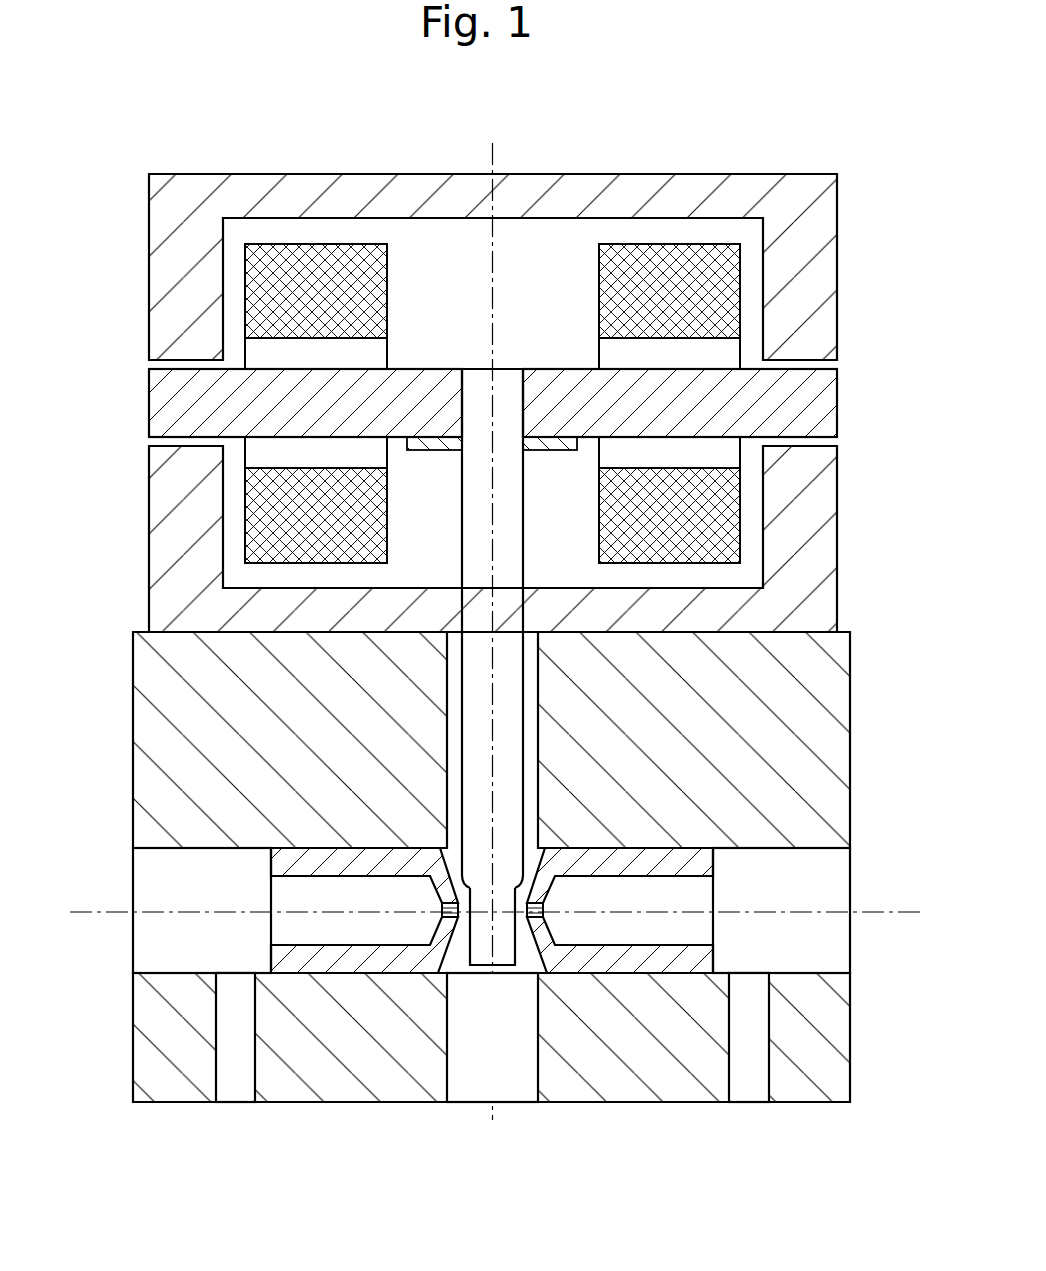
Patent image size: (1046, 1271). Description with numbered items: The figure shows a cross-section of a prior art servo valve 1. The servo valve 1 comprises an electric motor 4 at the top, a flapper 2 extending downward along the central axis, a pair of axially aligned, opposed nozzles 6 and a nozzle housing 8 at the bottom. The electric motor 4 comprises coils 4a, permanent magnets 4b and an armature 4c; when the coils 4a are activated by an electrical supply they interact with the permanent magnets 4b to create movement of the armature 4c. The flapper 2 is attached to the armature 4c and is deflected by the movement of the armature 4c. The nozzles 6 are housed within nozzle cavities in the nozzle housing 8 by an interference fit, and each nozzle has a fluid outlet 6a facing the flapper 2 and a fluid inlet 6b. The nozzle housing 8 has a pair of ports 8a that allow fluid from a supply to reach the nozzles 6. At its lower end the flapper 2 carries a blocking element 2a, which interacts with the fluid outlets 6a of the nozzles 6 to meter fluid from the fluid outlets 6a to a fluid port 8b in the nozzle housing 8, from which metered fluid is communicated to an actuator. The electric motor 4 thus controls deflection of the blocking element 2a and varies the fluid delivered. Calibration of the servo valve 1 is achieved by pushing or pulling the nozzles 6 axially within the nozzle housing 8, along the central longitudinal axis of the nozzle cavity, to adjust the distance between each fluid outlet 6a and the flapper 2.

The servo valve 1 is at (138, 143).
The flapper 2 is at (498, 610).
The blocking element 2a is at (503, 917).
The electric motor 4 is at (685, 143).
The coils 4a is at (700, 258).
The permanent magnets 4b is at (813, 277).
The armature 4c is at (785, 402).
The nozzles 6 is at (343, 963).
The fluid outlet 6a is at (440, 917).
The fluid inlet 6b is at (283, 900).
The nozzle housing 8 is at (202, 737).
The ports 8a is at (237, 1075).
The fluid port 8b is at (473, 1037).